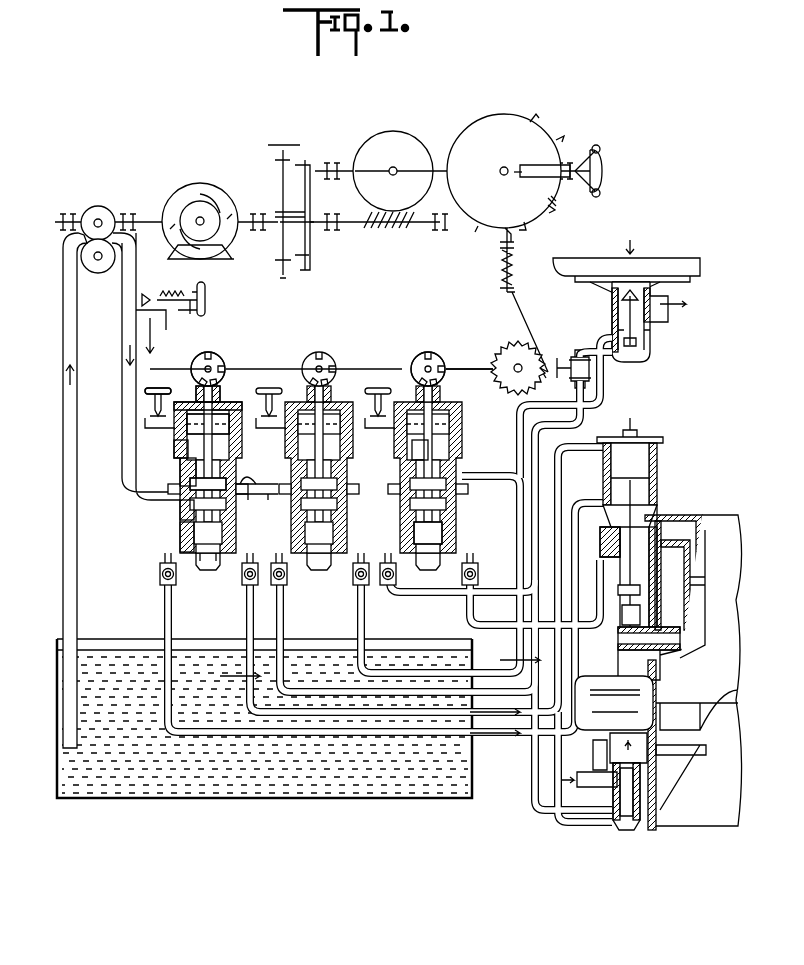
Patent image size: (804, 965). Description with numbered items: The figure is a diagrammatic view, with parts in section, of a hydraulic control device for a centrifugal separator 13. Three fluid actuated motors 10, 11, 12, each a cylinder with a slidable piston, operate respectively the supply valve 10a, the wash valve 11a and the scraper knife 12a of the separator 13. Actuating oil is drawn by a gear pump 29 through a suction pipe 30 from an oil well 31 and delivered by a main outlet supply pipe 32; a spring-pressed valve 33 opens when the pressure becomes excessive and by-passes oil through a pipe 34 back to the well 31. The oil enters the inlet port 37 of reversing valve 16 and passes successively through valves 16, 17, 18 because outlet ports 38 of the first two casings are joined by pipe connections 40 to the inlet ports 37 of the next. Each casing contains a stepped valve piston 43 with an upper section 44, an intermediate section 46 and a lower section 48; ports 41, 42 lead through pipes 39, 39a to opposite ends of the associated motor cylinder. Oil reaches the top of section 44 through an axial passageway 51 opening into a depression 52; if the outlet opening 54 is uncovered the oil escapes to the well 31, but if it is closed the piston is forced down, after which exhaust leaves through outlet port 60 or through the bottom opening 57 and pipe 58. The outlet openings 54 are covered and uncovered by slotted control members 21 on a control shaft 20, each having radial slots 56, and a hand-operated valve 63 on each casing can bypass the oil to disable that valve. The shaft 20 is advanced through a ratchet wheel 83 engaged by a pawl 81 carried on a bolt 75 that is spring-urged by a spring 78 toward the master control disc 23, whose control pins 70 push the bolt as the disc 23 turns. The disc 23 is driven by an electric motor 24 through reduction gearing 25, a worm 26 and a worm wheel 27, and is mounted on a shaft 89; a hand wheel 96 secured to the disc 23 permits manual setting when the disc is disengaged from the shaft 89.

The motor 10 is at (640, 336).
The supply valve 10a is at (620, 300).
The motor 11 is at (628, 830).
The wash valve 11a is at (675, 785).
The motor 12 is at (657, 462).
The scraper knife 12a is at (688, 578).
The separator 13 is at (688, 515).
The reversing valve 16 is at (188, 402).
The reversing valve 17 is at (290, 402).
The reversing valve 18 is at (398, 402).
The control shaft 20 is at (244, 368).
The control member 21 is at (214, 352).
The control disc 23 is at (492, 125).
The electric motor 24 is at (198, 200).
The reduction gearing 25 is at (305, 160).
The worm 26 is at (395, 228).
The worm wheel 27 is at (398, 140).
The gear pump 29 is at (93, 205).
The suction pipe 30 is at (62, 455).
The oil well 31 is at (130, 790).
The main outlet supply pipe 32 is at (122, 455).
The spring-pressed valve 33 is at (206, 306).
The by-pass pipe 34 is at (150, 330).
The inlet port 37 is at (182, 512).
The outlet port 38 is at (258, 484).
The pipe 39 is at (416, 590).
The pipe 39a is at (248, 627).
The pipe connection 40 is at (270, 496).
The port 41 is at (182, 540).
The port 42 is at (236, 484).
The valve piston 43 is at (182, 452).
The upper piston section 44 is at (222, 418).
The intermediate piston section 46 is at (458, 452).
The lower piston section 48 is at (444, 504).
The passageway 51 is at (176, 426).
The depression 52 is at (196, 386).
The outlet opening 54 is at (448, 370).
The radial slot 56 is at (440, 355).
The opening 57 is at (214, 556).
The pipe 58 is at (204, 556).
The outlet port 60 is at (188, 482).
The hand-operated valve 63 is at (156, 390).
The control pin 70 is at (555, 200).
The bolt 75 is at (514, 240).
The spring 78 is at (514, 283).
The pawl 81 is at (532, 320).
The ratchet wheel 83 is at (542, 366).
The shaft 89 is at (518, 178).
The hand wheel 96 is at (606, 171).